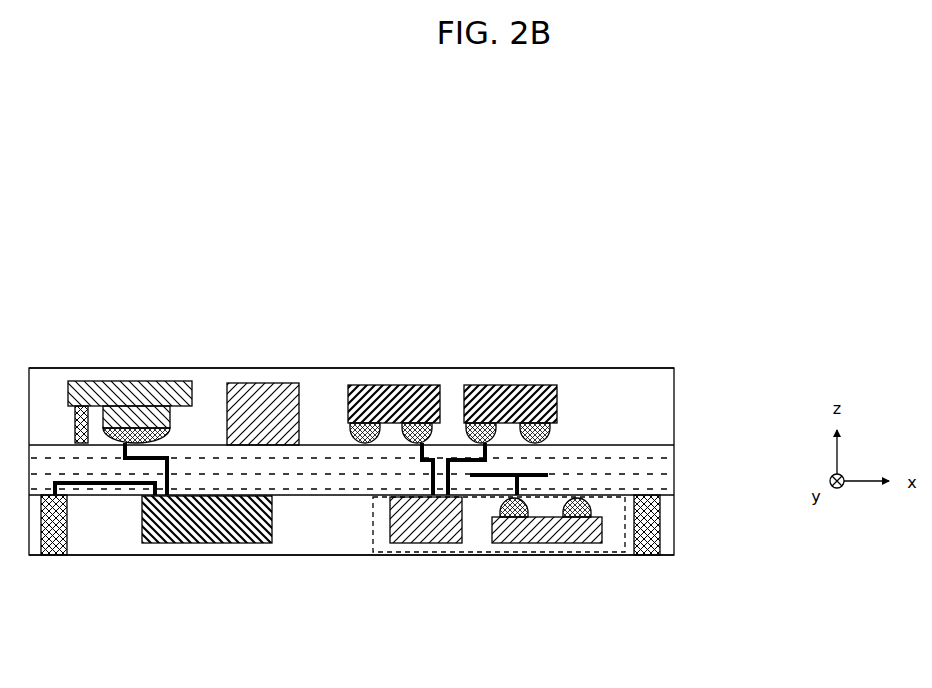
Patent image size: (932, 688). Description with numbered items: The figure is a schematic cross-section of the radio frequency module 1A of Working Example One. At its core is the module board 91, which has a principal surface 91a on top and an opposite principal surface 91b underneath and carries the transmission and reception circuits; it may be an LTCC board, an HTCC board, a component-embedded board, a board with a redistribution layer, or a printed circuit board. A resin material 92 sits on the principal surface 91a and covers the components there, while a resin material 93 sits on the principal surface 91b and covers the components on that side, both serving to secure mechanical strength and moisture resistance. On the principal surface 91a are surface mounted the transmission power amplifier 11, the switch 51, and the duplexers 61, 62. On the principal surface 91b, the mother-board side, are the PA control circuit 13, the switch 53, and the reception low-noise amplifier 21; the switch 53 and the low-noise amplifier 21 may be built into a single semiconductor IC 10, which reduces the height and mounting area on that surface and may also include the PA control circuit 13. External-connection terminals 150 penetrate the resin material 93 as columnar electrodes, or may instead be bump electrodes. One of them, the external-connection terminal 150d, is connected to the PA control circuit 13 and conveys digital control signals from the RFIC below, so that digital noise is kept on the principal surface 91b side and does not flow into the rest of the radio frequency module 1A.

The radio frequency module 1A is at (710, 342).
The resin material 92 is at (668, 392).
The principal surface 91a is at (666, 444).
The module board 91 is at (668, 468).
The principal surface 91b is at (668, 498).
The resin material 93 is at (670, 537).
The transmission power amplifier 11 is at (136, 380).
The switch 51 is at (255, 385).
The duplexer 61 is at (398, 385).
The duplexer 62 is at (512, 385).
The external-connection terminal 150d is at (52, 548).
The PA control circuit 13 is at (192, 543).
The semiconductor IC 10 is at (478, 550).
The switch 53 is at (437, 543).
The reception low-noise amplifier 21 is at (538, 543).
The external-connection terminal 150 is at (645, 550).